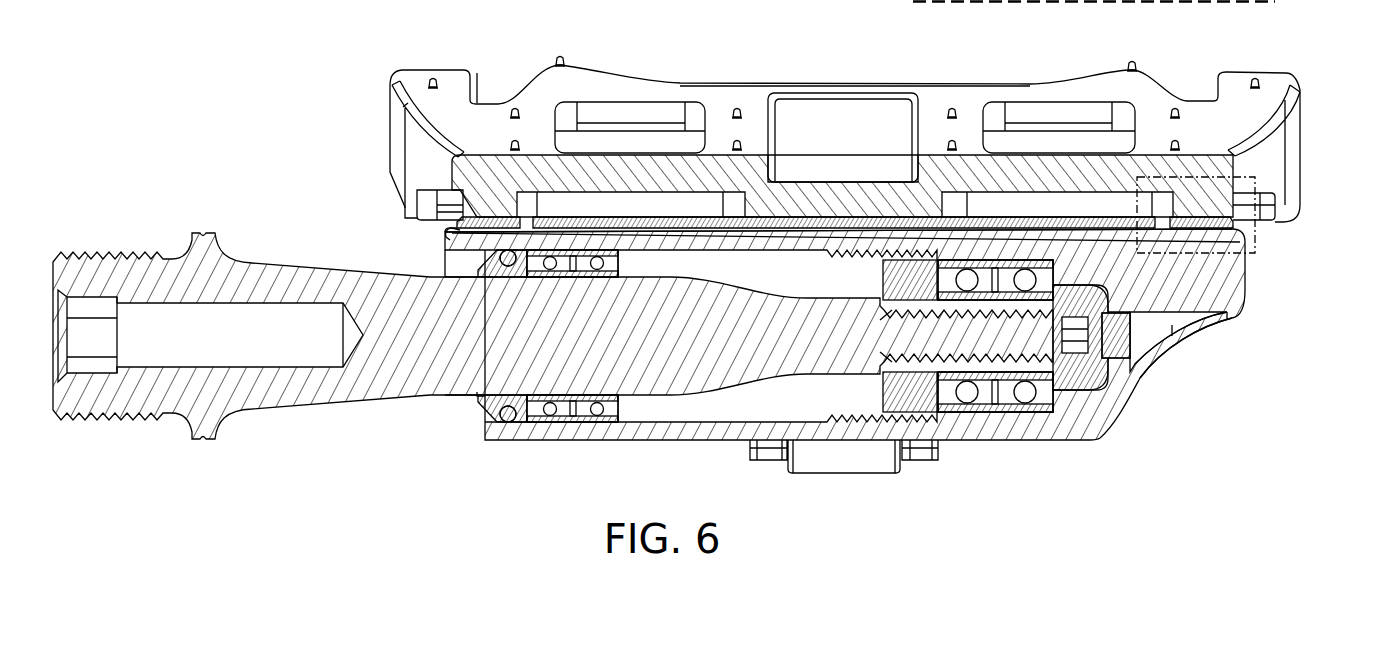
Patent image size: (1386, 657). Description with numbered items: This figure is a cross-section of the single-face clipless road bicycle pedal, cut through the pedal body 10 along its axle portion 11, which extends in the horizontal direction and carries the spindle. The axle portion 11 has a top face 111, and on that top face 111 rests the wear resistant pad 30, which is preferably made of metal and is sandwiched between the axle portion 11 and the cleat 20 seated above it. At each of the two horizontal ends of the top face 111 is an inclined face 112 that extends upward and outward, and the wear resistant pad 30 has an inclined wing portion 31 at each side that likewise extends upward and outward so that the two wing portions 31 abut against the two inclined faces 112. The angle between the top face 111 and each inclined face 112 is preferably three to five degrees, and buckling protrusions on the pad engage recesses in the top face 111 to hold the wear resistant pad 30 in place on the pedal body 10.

The pedal body 10 is at (1106, 450).
The axle portion 11 is at (1178, 297).
The cleat 20 is at (1237, 120).
The wear resistant pad 30 is at (677, 224).
The wing portion 31 is at (492, 222).
The top face 111 is at (763, 228).
The inclined face 112 is at (445, 237).